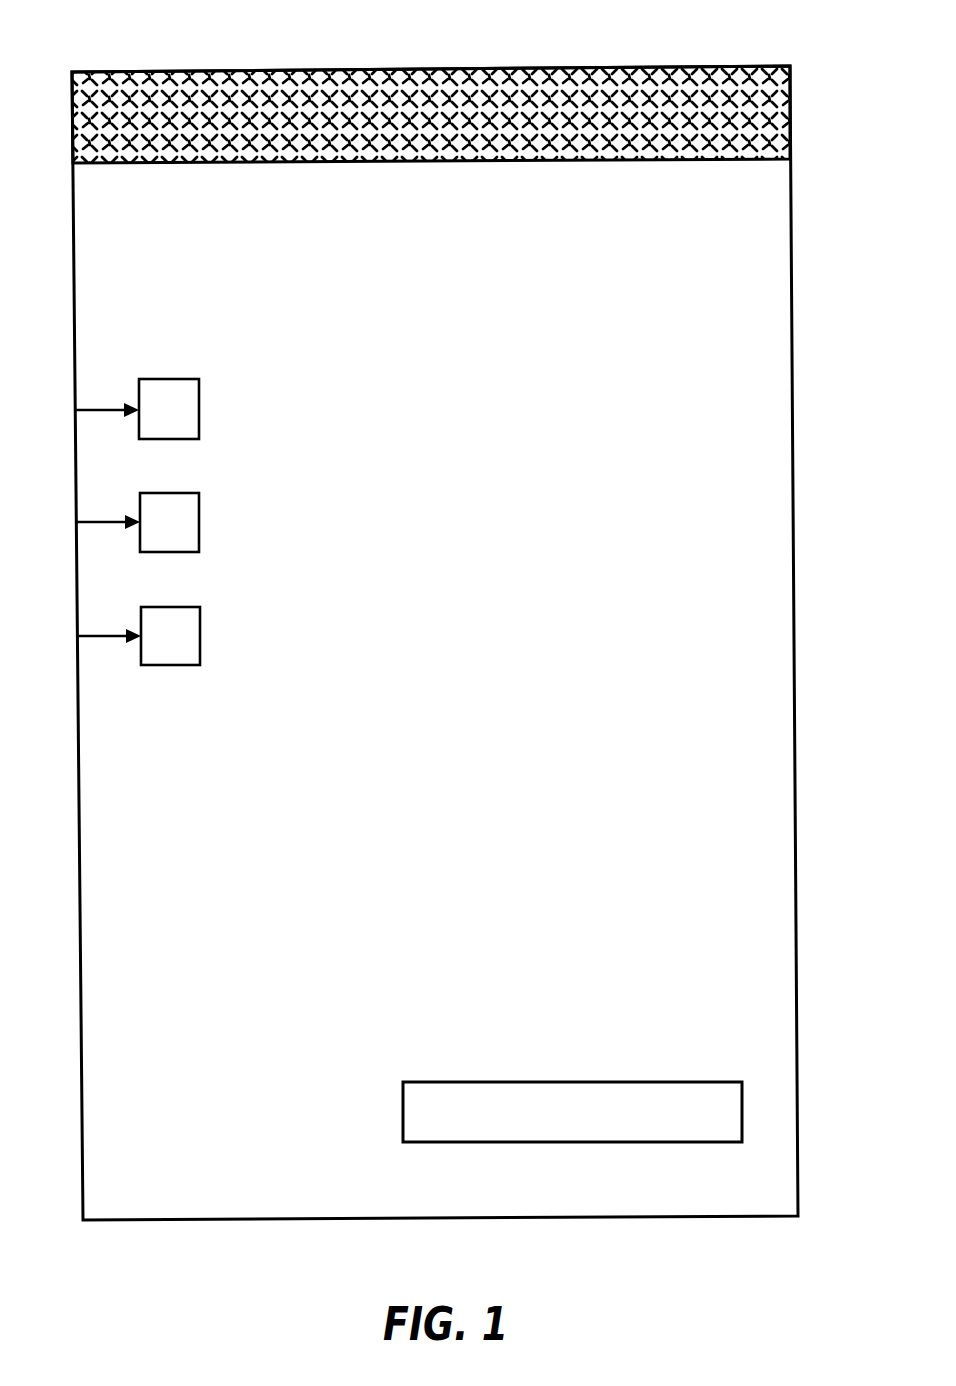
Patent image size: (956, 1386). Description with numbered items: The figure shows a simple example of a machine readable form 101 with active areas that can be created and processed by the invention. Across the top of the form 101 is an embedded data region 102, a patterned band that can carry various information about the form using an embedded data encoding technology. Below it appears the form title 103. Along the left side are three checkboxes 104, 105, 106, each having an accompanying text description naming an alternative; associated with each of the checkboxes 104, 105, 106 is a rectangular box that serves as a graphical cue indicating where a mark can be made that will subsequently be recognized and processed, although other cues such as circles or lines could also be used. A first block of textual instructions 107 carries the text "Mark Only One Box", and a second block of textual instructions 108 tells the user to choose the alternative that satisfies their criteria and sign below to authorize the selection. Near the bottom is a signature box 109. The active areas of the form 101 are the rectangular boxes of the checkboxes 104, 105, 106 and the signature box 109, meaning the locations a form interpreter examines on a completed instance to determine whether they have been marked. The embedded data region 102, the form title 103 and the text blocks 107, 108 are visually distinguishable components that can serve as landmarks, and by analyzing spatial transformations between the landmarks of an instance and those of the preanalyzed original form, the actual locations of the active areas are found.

The form 101 is at (196, 57).
The embedded data region 102 is at (520, 161).
The form title 103 is at (480, 262).
The checkbox 104 is at (158, 379).
The checkbox 105 is at (165, 493).
The checkbox 106 is at (180, 607).
The first block of textual instructions 107 is at (558, 750).
The second block of textual instructions 108 is at (237, 958).
The signature box 109 is at (420, 1082).